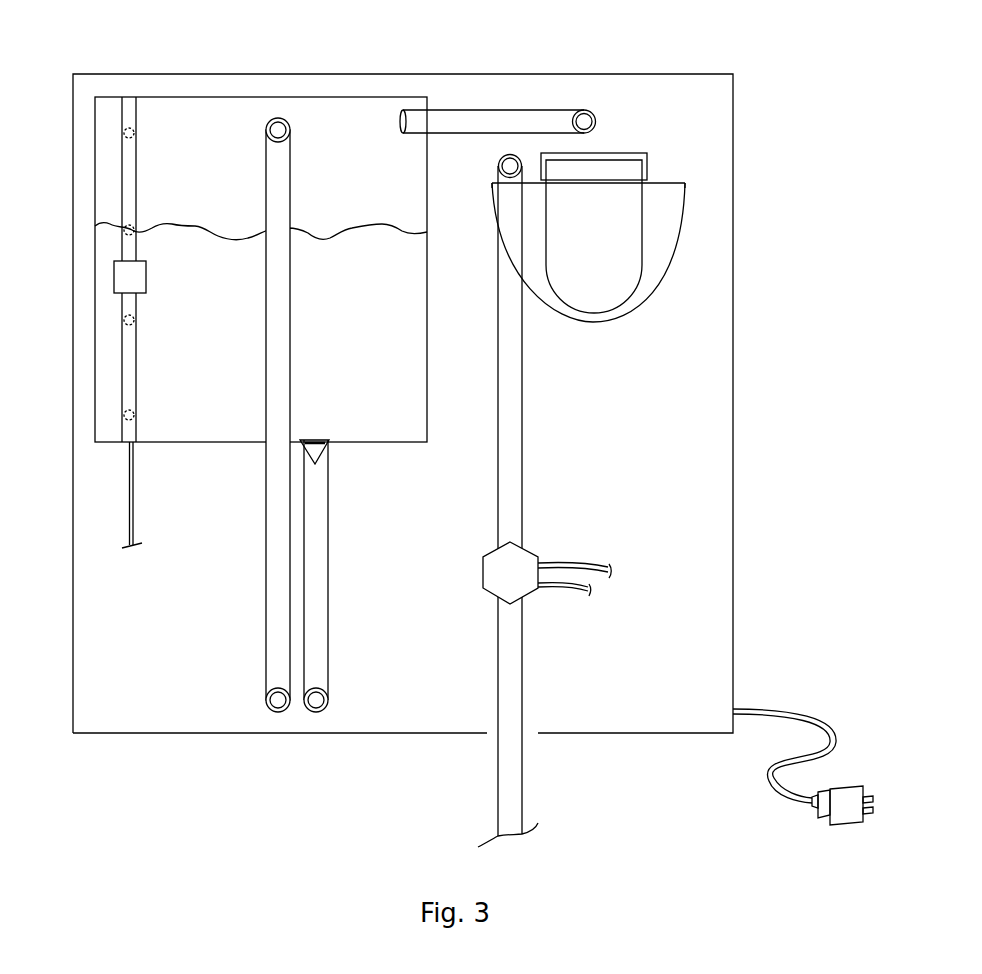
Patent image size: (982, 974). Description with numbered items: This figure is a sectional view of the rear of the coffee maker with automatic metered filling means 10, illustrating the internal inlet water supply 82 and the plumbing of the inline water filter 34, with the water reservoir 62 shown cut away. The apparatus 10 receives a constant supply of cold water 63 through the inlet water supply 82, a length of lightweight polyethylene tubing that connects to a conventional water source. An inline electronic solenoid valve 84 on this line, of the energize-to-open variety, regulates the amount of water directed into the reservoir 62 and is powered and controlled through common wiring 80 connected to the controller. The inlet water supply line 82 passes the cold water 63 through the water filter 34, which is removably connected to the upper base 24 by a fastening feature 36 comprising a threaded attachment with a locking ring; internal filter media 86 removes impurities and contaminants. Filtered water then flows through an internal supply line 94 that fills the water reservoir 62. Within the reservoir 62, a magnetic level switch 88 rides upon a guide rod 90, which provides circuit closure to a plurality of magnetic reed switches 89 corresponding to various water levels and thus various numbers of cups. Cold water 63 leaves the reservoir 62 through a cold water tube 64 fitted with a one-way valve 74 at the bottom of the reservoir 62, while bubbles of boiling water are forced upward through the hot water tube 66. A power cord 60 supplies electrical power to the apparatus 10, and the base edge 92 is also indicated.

The coffee maker with automatic metered filling means 10 is at (140, 793).
The upper base 24 is at (73, 413).
The inline water filter 34 is at (680, 221).
The fastening feature 36 is at (646, 167).
The power cord 60 is at (770, 777).
The water reservoir 62 is at (353, 115).
The cold water 63 is at (193, 225).
The cold water tube 64 is at (322, 553).
The hot water tube 66 is at (267, 159).
The one-way valve 74 is at (321, 450).
The wiring 80 is at (128, 500).
The inlet water supply 82 is at (513, 479).
The electronic solenoid valve 84 is at (528, 560).
The internal filter media 86 is at (605, 265).
The magnetic level switch 88 is at (125, 278).
The magnetic reed switches 89 is at (125, 131).
The guide rod 90 is at (127, 213).
The base edge 92 is at (487, 733).
The internal supply line 94 is at (465, 120).